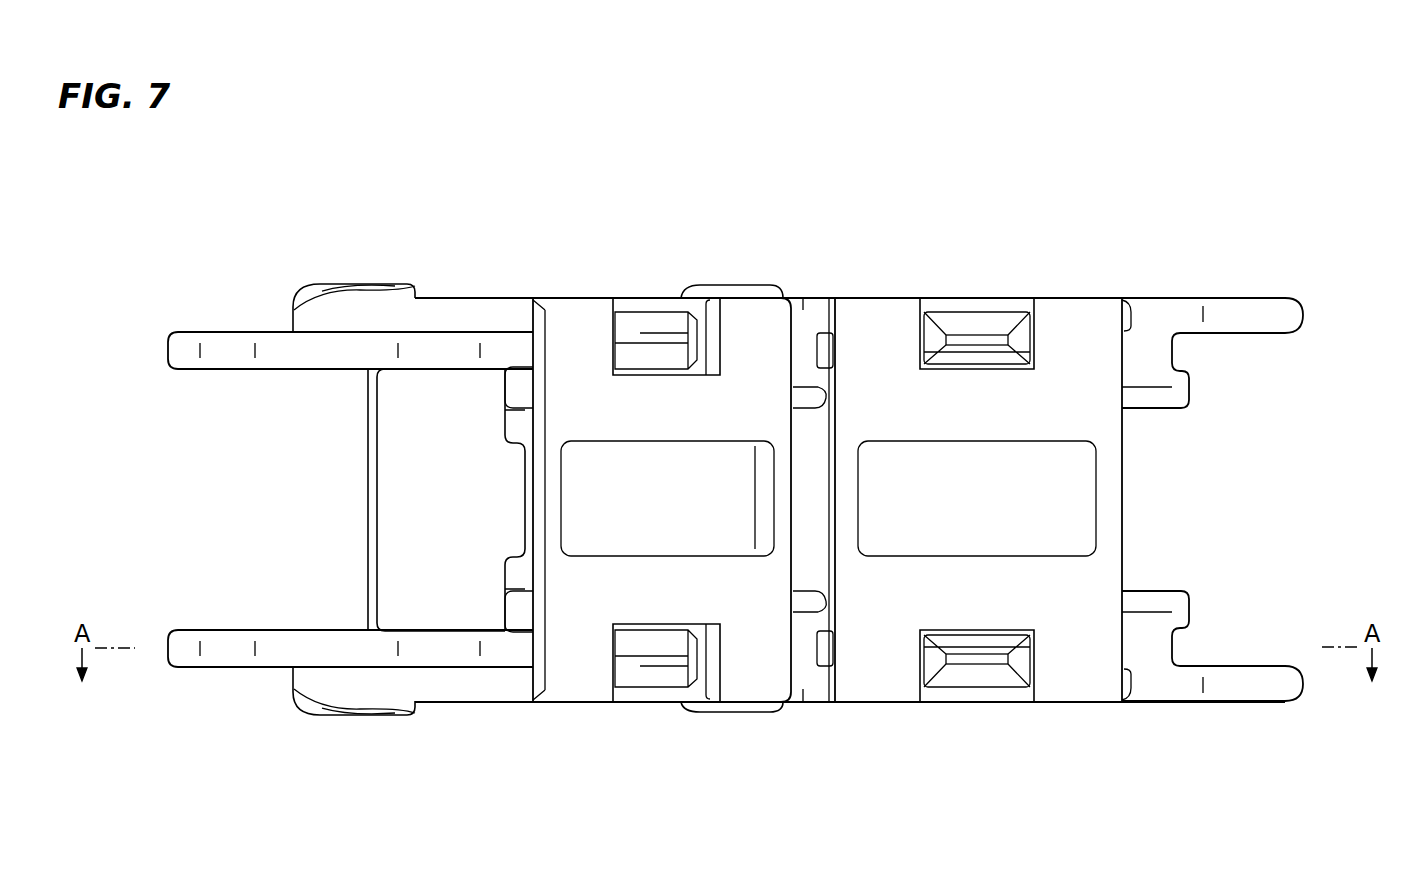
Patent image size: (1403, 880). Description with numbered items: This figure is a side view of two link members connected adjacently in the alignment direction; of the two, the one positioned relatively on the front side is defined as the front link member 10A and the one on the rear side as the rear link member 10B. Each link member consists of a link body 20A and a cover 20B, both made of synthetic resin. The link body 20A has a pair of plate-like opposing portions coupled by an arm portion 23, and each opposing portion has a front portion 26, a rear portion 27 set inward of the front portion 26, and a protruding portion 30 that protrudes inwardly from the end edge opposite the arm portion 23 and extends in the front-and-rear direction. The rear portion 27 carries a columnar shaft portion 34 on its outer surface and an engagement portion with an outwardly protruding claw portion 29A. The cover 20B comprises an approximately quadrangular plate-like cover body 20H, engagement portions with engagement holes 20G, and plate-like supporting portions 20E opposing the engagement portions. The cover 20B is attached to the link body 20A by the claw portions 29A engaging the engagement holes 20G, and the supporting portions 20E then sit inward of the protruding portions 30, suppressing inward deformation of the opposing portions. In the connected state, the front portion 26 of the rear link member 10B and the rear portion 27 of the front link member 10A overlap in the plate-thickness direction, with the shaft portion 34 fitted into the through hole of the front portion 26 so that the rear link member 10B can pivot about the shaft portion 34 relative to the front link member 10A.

The front link member 10A is at (1047, 242).
The rear link member 10B is at (335, 248).
The link body 20A is at (478, 297).
The cover 20B is at (758, 665).
The supporting portion 20E is at (512, 425).
The engagement hole 20G is at (630, 336).
The cover body 20H is at (784, 493).
The arm portion 23 is at (397, 496).
The front portion 26 is at (803, 310).
The rear portion 27 is at (178, 352).
The claw portion 29A is at (665, 340).
The protruding portion 30 is at (512, 396).
The shaft portion 34 is at (740, 290).